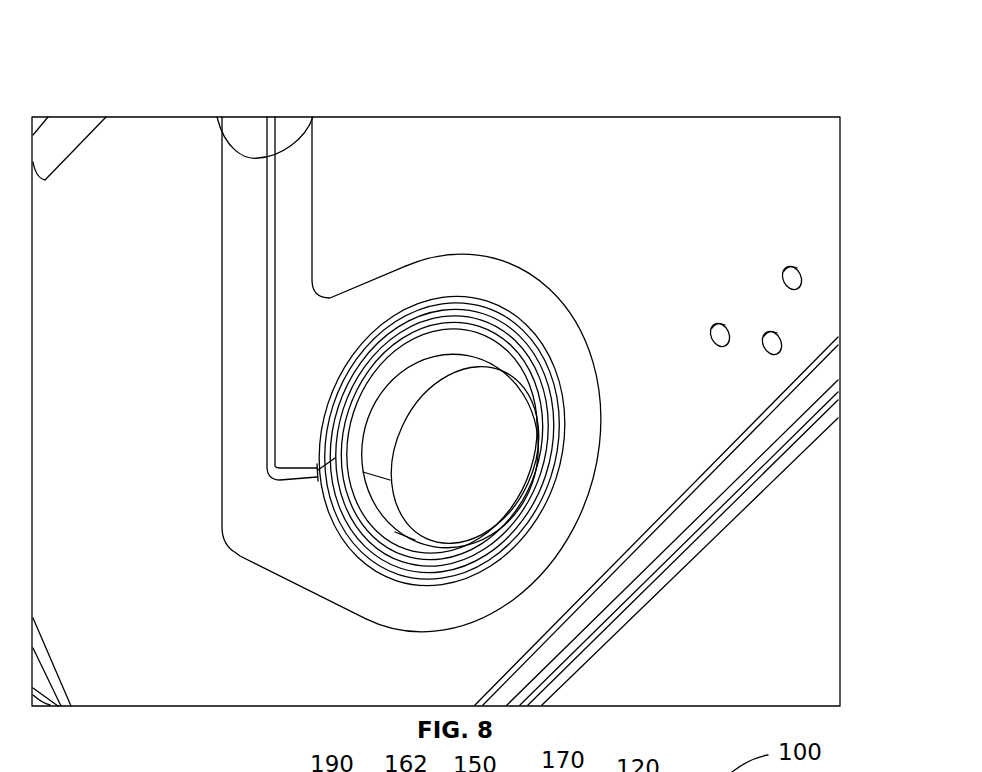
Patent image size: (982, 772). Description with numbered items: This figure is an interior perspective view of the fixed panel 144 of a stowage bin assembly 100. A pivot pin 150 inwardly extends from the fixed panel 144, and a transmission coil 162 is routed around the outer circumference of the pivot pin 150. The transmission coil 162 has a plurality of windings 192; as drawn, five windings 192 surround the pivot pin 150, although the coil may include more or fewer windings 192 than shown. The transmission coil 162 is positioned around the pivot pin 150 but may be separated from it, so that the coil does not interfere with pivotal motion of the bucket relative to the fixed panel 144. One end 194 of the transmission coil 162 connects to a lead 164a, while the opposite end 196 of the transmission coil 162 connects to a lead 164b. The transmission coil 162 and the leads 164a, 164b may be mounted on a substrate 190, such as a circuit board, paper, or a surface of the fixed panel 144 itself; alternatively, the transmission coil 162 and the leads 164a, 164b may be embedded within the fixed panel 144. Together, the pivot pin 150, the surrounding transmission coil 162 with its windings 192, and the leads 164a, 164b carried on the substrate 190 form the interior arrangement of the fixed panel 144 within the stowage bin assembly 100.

The stowage bin assembly 100 is at (748, 72).
The fixed panel 144 is at (807, 170).
The pivot pin 150 is at (493, 300).
The transmission coil 162 is at (448, 402).
The lead 164a is at (222, 138).
The lead 164b is at (312, 137).
The substrate 190 is at (363, 287).
The windings 192 is at (435, 300).
The end of transmission coil 194 is at (310, 465).
The opposite end of transmission coil 196 is at (307, 468).